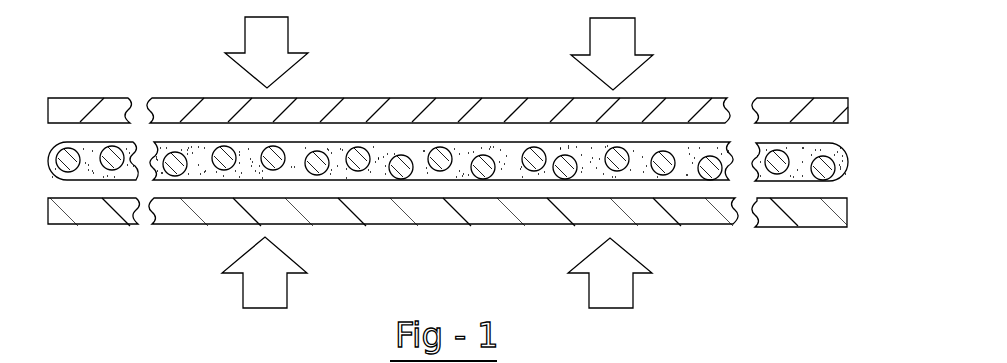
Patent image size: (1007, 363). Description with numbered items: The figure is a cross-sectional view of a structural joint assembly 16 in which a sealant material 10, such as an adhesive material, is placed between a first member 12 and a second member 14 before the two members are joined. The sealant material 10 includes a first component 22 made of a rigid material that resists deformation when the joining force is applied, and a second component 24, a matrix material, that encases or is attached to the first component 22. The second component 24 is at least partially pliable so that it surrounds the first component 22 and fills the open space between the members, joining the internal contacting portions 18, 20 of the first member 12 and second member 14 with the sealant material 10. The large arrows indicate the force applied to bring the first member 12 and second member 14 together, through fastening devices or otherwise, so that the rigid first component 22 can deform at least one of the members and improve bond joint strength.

The sealant material 10 is at (455, 154).
The first member 12 is at (397, 108).
The second member 14 is at (432, 222).
The joint assembly 16 is at (704, 62).
The internal portion of first member 18 is at (203, 125).
The internal portion of second member 20 is at (647, 202).
The first component 22 is at (360, 158).
The second component 24 is at (463, 163).